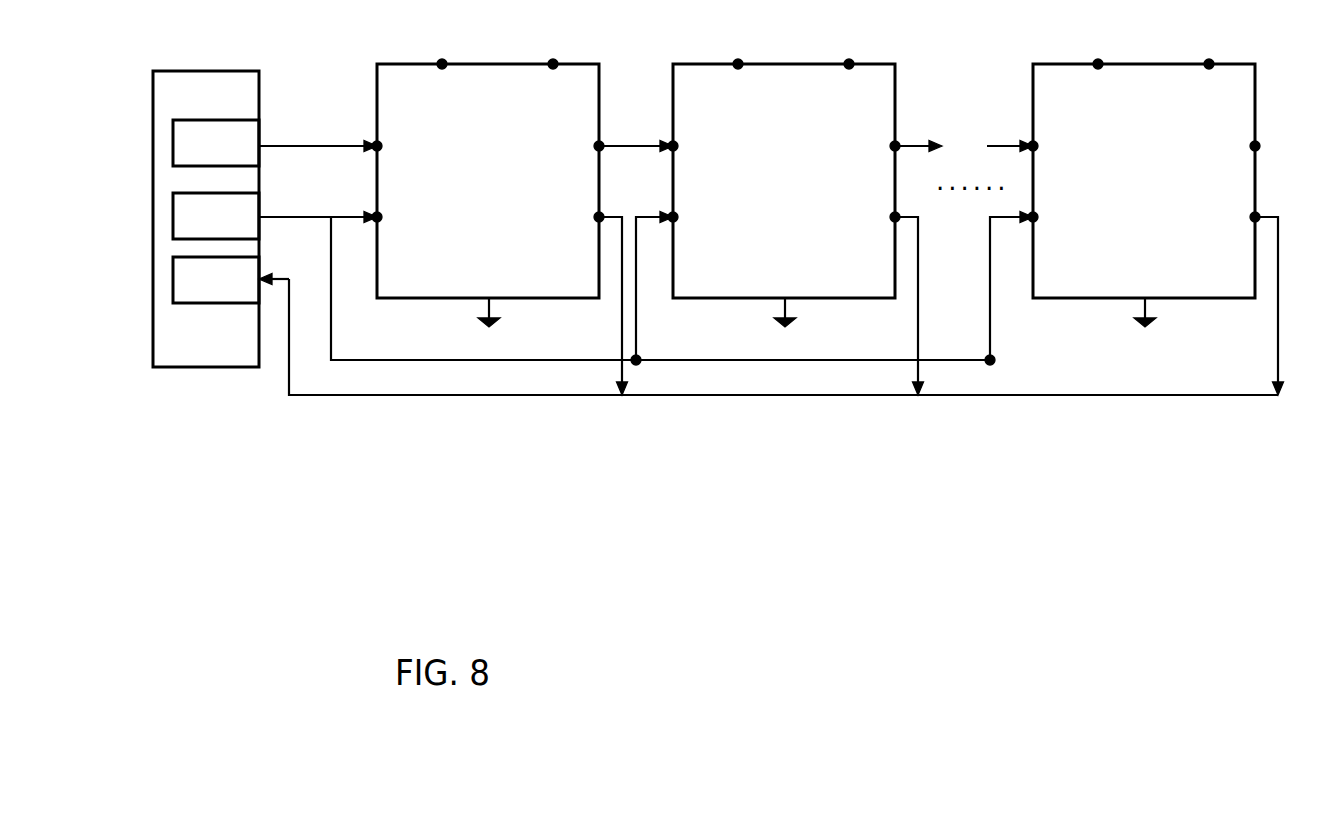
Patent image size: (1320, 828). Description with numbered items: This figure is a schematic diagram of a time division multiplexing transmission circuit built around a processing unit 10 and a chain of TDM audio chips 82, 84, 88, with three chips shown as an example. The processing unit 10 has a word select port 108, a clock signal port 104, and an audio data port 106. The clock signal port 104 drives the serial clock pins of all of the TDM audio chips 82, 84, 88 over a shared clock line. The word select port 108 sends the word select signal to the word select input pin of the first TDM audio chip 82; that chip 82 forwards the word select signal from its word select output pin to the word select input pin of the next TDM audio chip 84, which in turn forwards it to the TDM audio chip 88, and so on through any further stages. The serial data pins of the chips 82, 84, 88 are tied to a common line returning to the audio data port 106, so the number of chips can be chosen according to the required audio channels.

The processing unit 10 is at (153, 283).
The W_S port 108 is at (216, 143).
The clock signal port 104 is at (216, 216).
The audio data port 106 is at (216, 280).
The TDM audio chip 82 is at (377, 281).
The TDM audio chip 84 is at (690, 300).
The TDM audio chip 88 is at (1053, 300).